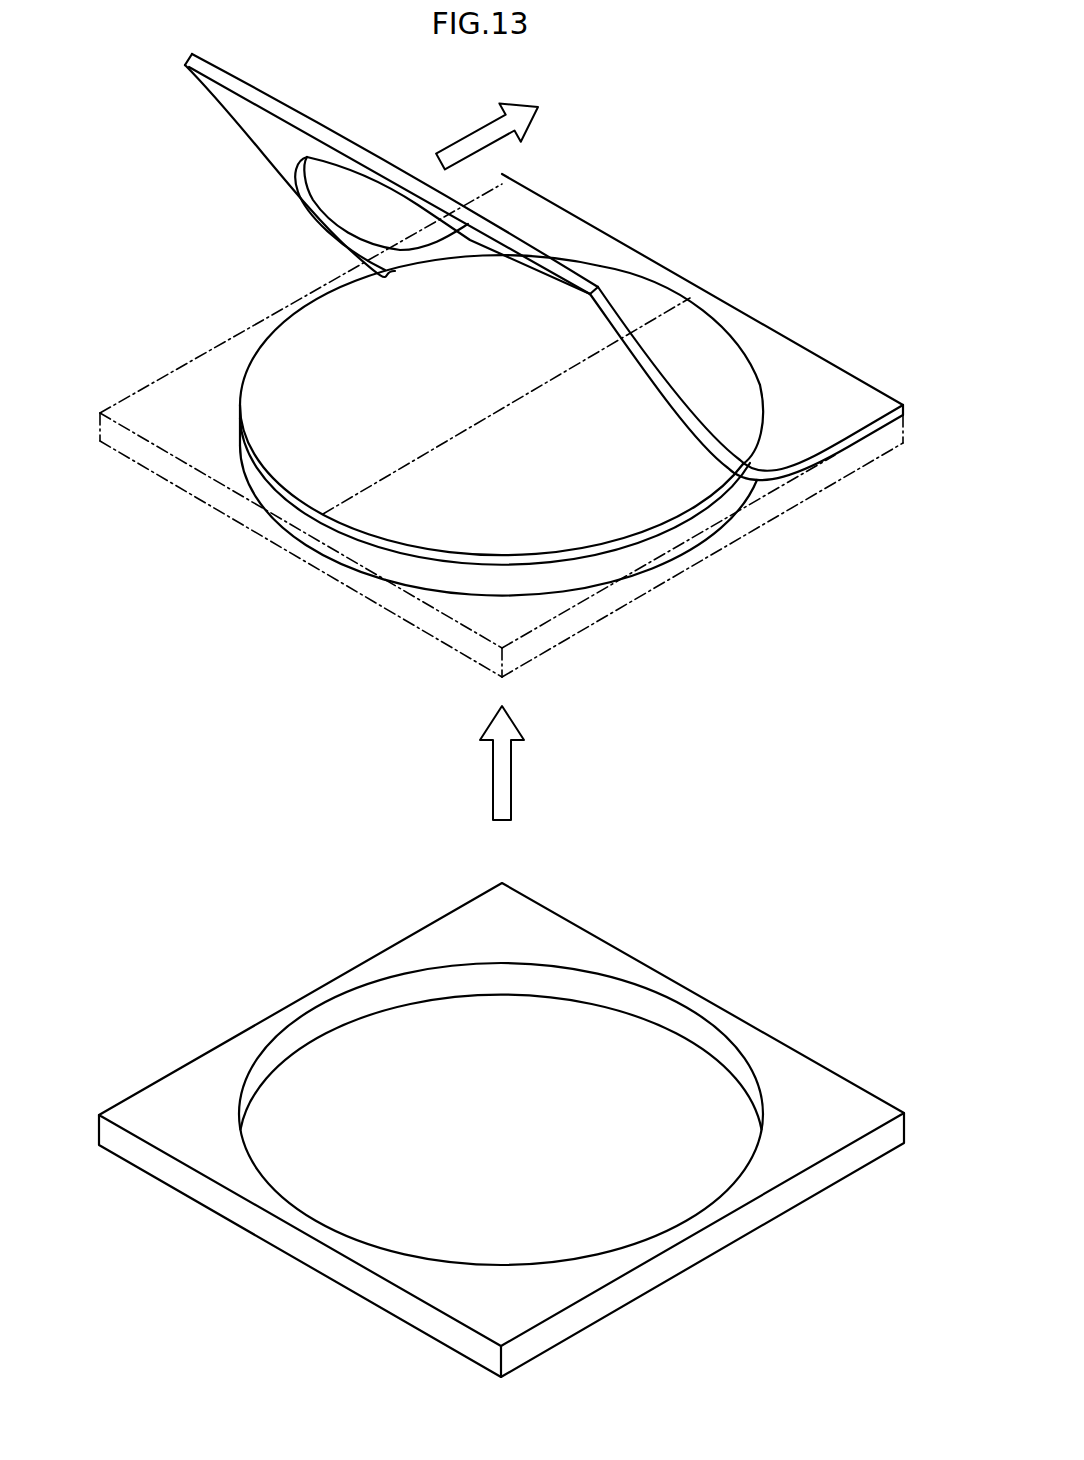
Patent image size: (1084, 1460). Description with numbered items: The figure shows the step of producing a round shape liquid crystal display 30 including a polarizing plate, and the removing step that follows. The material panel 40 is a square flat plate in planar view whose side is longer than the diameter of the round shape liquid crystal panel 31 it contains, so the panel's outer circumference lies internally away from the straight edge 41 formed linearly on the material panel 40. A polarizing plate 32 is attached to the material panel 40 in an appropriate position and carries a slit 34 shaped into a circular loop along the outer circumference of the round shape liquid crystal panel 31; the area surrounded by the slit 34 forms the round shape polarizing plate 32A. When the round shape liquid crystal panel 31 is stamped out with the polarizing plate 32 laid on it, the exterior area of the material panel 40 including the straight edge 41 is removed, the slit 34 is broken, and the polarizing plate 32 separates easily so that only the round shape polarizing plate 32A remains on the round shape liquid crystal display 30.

The round shape liquid crystal display 30 is at (548, 446).
The round shape liquid crystal panel 31 is at (623, 572).
The polarizing plate 32 is at (803, 380).
The round shape polarizing plate 32A is at (637, 506).
The slit 34 is at (747, 350).
The material panel 40 is at (501, 1130).
The straight edge 41 is at (810, 1183).